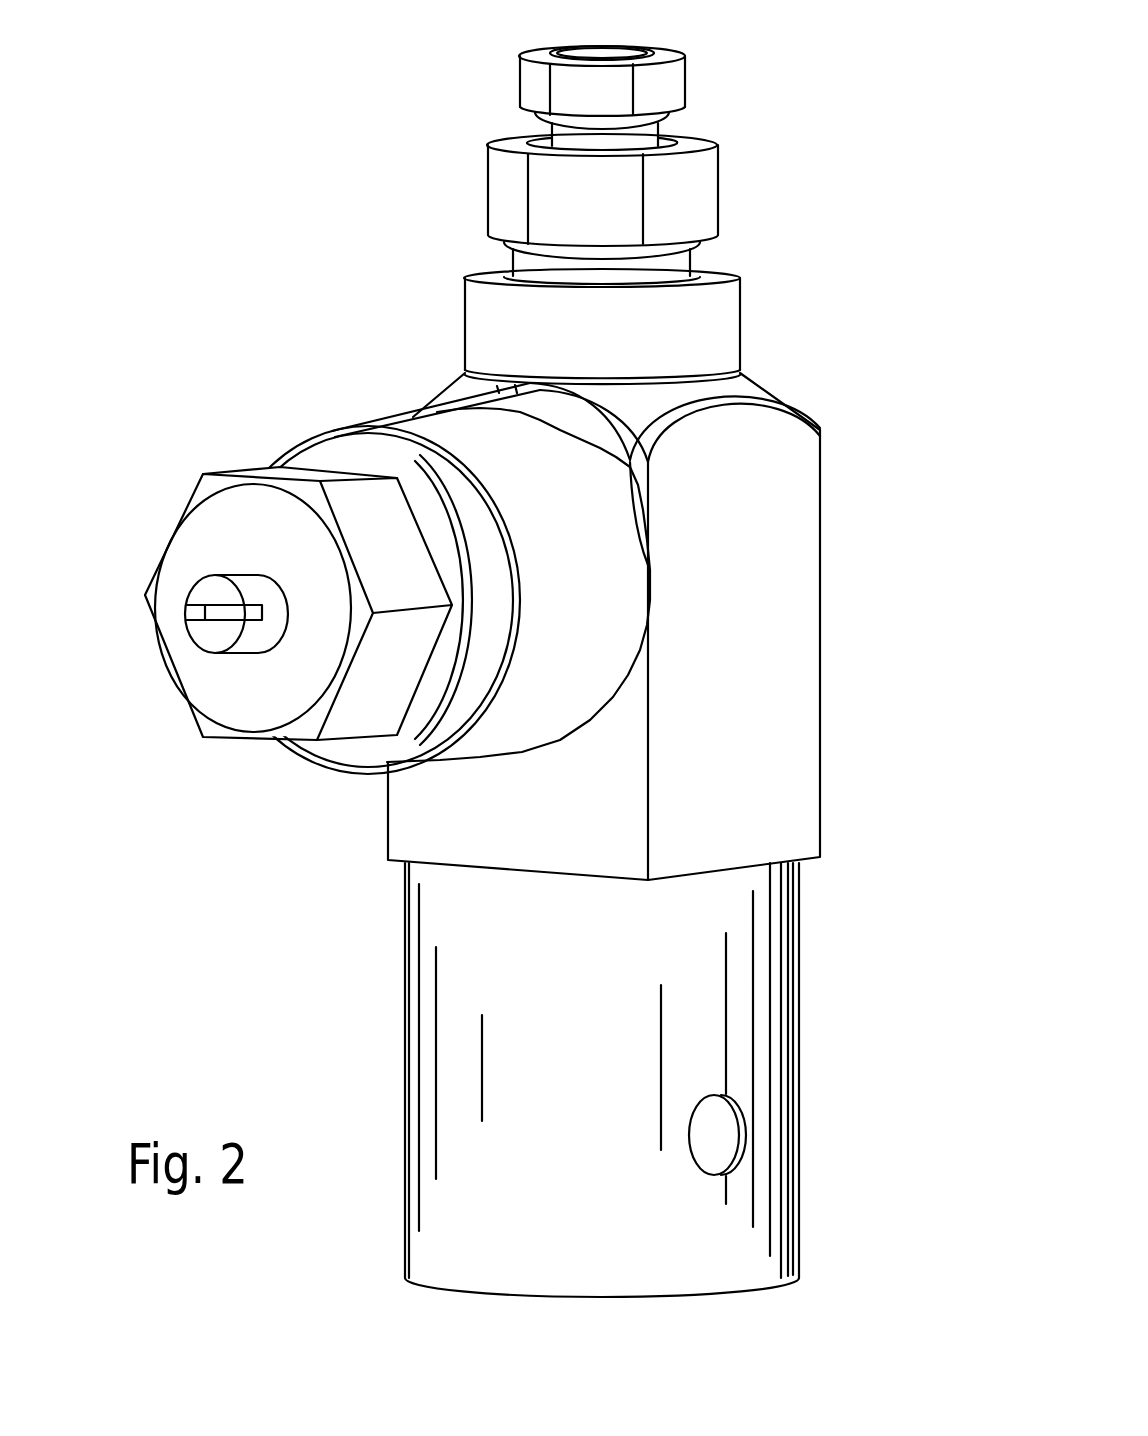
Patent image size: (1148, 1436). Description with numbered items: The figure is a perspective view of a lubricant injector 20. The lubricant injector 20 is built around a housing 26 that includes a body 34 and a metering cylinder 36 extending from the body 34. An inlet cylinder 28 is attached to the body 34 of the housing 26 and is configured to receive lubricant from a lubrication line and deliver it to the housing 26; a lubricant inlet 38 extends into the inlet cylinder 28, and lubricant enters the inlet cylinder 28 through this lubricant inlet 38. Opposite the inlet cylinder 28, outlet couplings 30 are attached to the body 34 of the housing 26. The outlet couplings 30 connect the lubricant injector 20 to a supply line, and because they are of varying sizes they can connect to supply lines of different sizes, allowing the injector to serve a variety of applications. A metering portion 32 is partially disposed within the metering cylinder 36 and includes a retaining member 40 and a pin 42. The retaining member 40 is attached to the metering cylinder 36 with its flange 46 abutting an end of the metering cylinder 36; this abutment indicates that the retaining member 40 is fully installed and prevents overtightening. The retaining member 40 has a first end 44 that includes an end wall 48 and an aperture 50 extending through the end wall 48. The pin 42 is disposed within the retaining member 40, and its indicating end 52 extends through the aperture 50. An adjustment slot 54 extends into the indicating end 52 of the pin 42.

The lubricant injector 20 is at (504, 651).
The housing 26 is at (822, 500).
The inlet cylinder 28 is at (675, 1080).
The outlet couplings 30 is at (723, 160).
The metering portion 32 is at (222, 385).
The body 34 is at (765, 648).
The metering cylinder 36 is at (480, 443).
The lubricant inlet 38 is at (720, 1132).
The retaining member 40 is at (340, 770).
The pin 42 is at (227, 568).
The first end 44 is at (232, 472).
The flange 46 is at (320, 433).
The end wall 48 is at (252, 702).
The aperture 50 is at (257, 650).
The indicating end 52 is at (205, 633).
The adjustment slot 54 is at (205, 608).